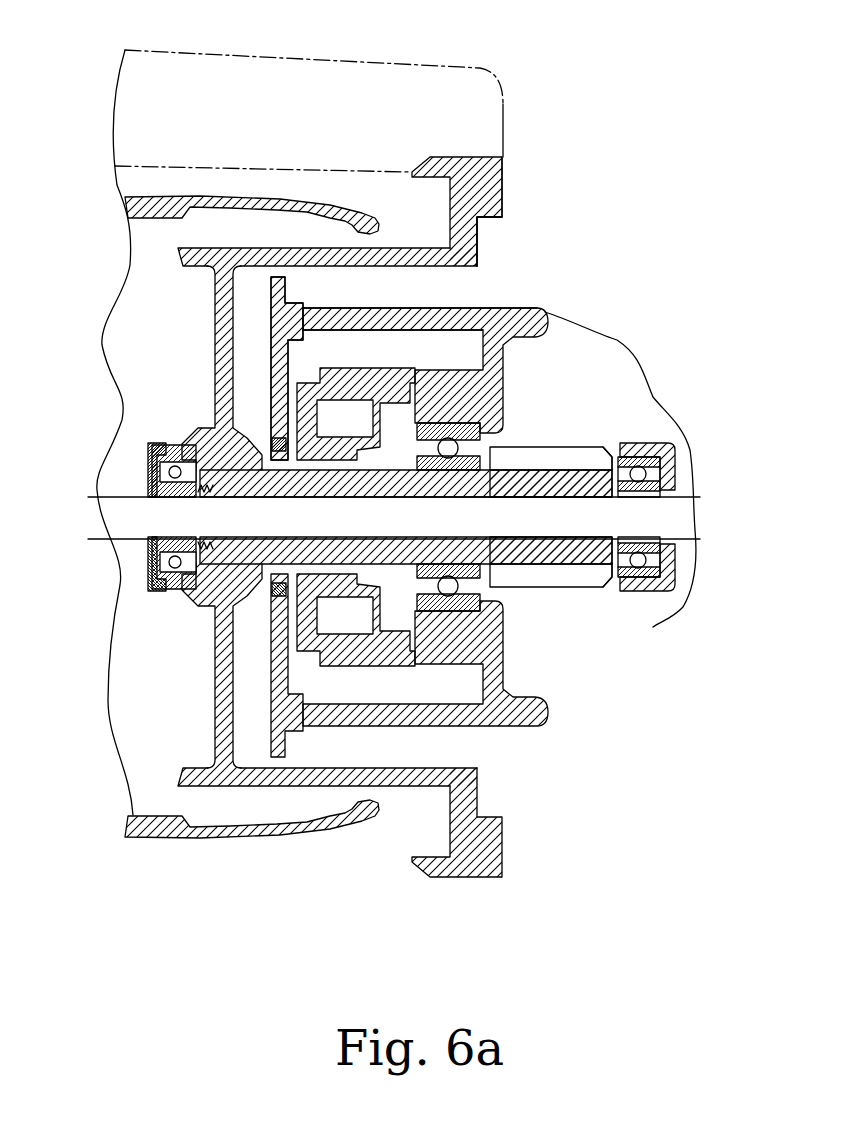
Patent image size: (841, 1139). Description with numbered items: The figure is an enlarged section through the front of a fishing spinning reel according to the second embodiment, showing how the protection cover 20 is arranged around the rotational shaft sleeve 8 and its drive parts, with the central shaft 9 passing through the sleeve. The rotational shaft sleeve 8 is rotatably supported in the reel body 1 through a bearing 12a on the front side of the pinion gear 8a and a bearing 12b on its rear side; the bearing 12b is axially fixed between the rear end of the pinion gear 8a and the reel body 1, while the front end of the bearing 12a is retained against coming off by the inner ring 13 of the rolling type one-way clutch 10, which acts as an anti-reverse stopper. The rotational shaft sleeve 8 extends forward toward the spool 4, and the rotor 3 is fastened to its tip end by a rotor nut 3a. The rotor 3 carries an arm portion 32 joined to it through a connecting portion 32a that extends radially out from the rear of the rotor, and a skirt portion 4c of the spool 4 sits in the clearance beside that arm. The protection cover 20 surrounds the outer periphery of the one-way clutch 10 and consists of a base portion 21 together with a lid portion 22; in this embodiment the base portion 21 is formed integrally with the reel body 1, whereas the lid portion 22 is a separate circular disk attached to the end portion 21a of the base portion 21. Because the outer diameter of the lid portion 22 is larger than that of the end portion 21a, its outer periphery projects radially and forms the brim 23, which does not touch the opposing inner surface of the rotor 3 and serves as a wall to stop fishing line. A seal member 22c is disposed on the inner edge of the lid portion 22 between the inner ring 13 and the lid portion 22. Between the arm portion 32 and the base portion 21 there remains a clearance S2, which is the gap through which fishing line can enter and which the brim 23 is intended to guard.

The skirt portion 4c is at (278, 200).
The spool 4 is at (309, 427).
The end portion 21a is at (318, 322).
The arm portion 32 is at (481, 168).
The connecting portion 32a is at (477, 250).
The clearance S2 is at (557, 229).
The brim 23 is at (266, 254).
The rotor 3 is at (202, 297).
The lid portion 22 is at (282, 322).
The protection cover 20 is at (257, 376).
The base portion 21 is at (458, 310).
The reel body 1 is at (480, 496).
The bearing 12a is at (452, 445).
The bearing 12b is at (638, 468).
The shaft 9 is at (120, 512).
The inner ring 13 is at (344, 480).
The rotor nut 3a is at (207, 595).
The seal member 22c is at (272, 626).
The one-way clutch 10 is at (338, 600).
The rotational shaft sleeve 8 is at (537, 567).
The pinion gear 8a is at (611, 590).